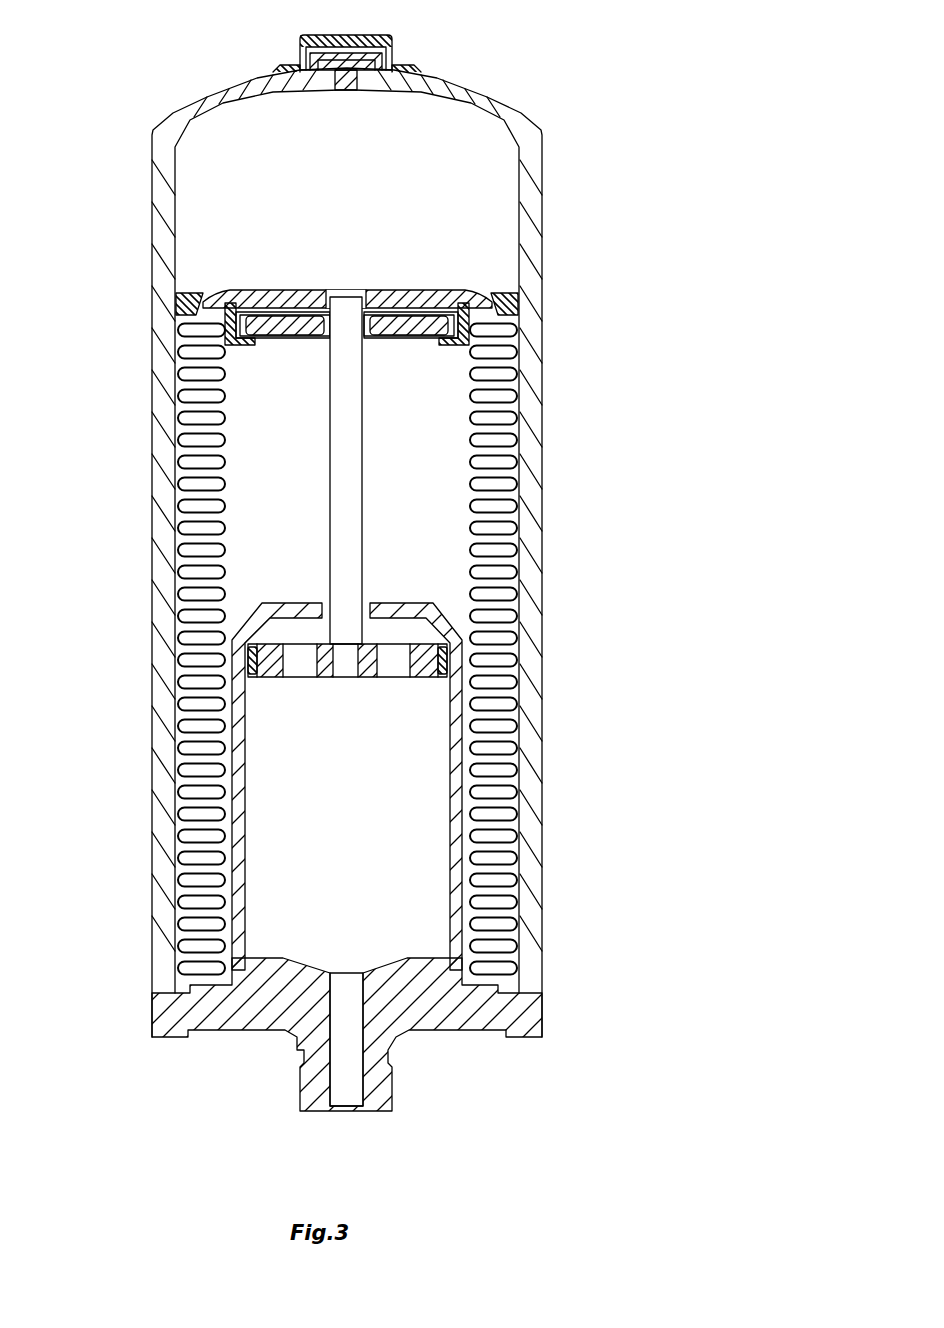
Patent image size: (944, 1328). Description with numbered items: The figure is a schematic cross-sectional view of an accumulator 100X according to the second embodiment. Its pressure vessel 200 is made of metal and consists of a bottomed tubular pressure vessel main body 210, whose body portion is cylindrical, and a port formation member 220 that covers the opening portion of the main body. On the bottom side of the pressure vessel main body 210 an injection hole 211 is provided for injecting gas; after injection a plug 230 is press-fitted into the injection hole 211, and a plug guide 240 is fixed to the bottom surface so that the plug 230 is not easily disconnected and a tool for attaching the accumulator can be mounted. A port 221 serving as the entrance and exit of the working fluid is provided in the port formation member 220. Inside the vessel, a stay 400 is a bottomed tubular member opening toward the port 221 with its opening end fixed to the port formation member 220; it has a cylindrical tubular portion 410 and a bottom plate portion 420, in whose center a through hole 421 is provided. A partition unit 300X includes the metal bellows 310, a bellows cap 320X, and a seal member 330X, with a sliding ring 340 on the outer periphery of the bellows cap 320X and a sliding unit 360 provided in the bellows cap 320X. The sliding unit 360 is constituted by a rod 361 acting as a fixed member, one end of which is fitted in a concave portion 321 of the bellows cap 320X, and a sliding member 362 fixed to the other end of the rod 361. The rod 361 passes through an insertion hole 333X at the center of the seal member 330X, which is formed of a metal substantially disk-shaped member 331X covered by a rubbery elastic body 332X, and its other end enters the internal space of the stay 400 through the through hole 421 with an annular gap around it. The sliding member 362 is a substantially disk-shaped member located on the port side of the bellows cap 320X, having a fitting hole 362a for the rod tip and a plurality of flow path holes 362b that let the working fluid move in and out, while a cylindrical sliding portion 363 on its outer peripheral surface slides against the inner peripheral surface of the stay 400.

The accumulator 100X is at (347, 556).
The pressure vessel 200 is at (347, 578).
The pressure vessel main body 210 is at (407, 540).
The injection hole 211 is at (346, 84).
The port formation member 220 is at (347, 1035).
The port 221 is at (362, 1067).
The plug 230 is at (356, 50).
The plug guide 240 is at (318, 35).
The partition unit 300X is at (343, 571).
The metal bellows 310 is at (522, 781).
The bellows cap 320X is at (416, 257).
The concave portion 321 is at (338, 306).
The seal member 330X is at (257, 341).
The substantially disk-shaped member 331X is at (300, 313).
The rubbery elastic body 332X is at (252, 312).
The insertion hole 333X is at (340, 343).
The sliding ring 340 is at (518, 300).
The sliding unit 360 is at (350, 638).
The rod 361 is at (345, 398).
The sliding member 362 is at (252, 812).
The fitting hole 362a is at (357, 673).
The flow path holes 362b is at (303, 673).
The sliding portion 363 is at (247, 667).
The stay 400 is at (352, 744).
The tubular portion 410 is at (460, 852).
The bottom plate portion 420 is at (270, 592).
The through hole 421 is at (367, 600).